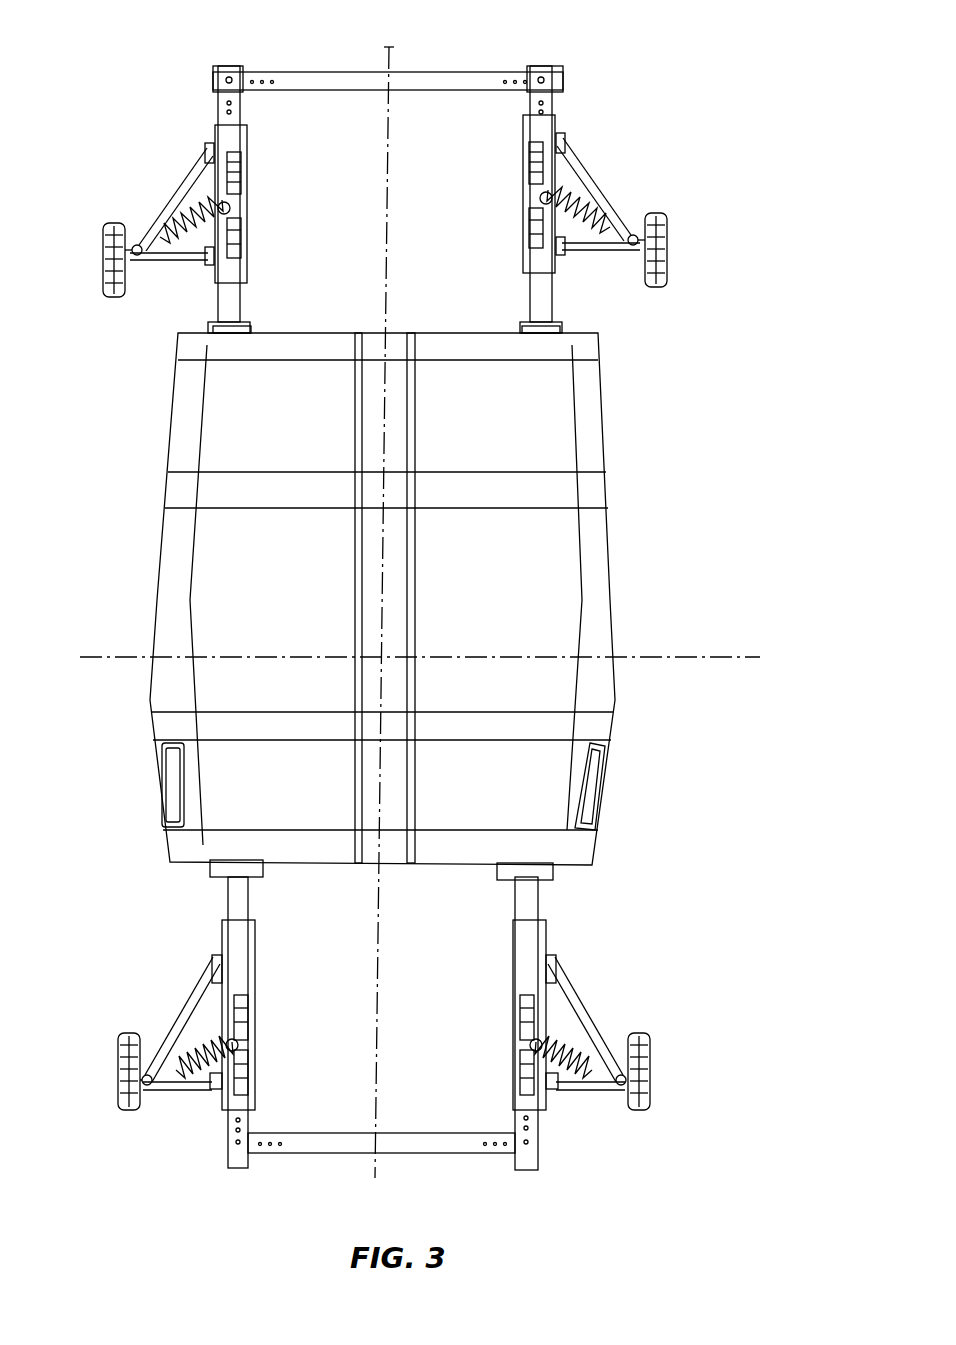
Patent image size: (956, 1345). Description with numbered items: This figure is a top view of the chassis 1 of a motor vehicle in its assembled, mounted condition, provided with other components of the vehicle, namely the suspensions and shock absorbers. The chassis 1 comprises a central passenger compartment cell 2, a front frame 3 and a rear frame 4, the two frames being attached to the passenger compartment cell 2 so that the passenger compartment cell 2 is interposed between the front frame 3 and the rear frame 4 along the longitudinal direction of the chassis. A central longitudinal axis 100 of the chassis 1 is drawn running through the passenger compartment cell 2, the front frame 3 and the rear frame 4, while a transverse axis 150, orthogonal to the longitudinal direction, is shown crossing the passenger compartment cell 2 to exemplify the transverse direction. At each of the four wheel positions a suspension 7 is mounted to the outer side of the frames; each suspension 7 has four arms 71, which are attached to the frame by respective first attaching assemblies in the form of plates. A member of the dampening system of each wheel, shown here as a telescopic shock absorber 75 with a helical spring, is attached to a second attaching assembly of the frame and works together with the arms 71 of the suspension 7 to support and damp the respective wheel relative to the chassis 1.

The chassis 1 is at (692, 350).
The passenger compartment cell 2 is at (675, 562).
The front frame 3 is at (624, 130).
The rear frame 4 is at (135, 960).
The suspension 7 is at (178, 162).
The arm 71 is at (556, 984).
The telescopic shock absorber 75 is at (547, 1042).
The central longitudinal axis 100 is at (395, 56).
The transverse axis 150 is at (665, 660).